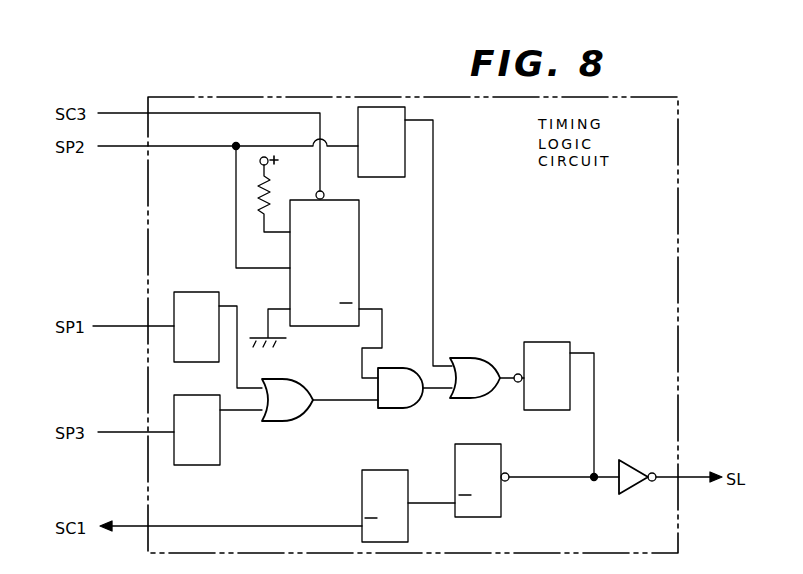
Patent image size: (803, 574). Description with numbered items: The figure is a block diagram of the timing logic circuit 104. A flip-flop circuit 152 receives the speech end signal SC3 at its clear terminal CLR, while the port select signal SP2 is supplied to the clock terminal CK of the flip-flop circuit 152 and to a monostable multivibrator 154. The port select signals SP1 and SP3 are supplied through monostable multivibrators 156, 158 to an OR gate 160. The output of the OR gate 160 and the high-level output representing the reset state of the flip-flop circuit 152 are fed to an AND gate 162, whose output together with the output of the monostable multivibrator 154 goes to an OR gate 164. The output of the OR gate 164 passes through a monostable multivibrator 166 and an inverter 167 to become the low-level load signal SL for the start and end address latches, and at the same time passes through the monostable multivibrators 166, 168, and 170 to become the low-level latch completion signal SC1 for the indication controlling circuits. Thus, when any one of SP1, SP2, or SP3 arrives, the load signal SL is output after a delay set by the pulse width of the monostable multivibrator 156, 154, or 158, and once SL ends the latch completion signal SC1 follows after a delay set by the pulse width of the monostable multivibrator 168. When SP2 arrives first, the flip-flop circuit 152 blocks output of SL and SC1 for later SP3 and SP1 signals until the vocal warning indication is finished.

The timing logic circuit 104 is at (147, 250).
The flip-flop circuit 152 is at (354, 248).
The monostable multivibrator 154 is at (386, 177).
The monostable multivibrator 156 is at (190, 296).
The monostable multivibrator 158 is at (208, 466).
The OR gate 160 is at (280, 413).
The AND gate 162 is at (403, 397).
The OR gate 164 is at (468, 362).
The monostable multivibrator 166 is at (546, 343).
The inverter 167 is at (631, 462).
The monostable multivibrator 168 is at (502, 500).
The monostable multivibrator 170 is at (377, 470).